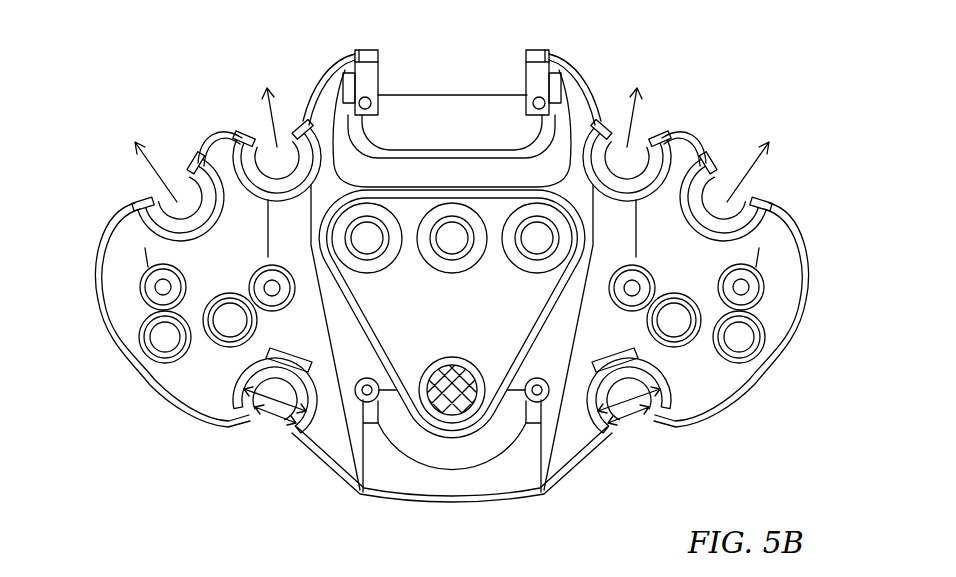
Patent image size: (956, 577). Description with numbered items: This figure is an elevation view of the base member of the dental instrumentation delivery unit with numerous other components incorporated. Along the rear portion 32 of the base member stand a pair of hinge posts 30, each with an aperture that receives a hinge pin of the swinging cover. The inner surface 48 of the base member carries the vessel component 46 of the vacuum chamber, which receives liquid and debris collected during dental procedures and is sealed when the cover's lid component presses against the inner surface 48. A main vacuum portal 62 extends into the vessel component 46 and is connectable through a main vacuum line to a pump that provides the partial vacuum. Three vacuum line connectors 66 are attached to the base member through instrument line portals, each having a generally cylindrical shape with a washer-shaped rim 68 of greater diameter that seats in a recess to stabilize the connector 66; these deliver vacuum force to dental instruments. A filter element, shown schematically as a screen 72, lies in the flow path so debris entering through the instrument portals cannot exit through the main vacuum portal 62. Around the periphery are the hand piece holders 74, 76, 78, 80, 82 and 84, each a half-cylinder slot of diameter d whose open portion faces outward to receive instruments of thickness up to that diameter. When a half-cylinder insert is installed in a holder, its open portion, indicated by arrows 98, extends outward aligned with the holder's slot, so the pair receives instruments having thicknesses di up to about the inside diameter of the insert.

The hinge post 30 is at (366, 80).
The rear portion 32 is at (450, 63).
The vessel component 46 is at (390, 362).
The inner surface 48 is at (353, 358).
The main vacuum portal 62 is at (452, 418).
The vacuum line connector 66 is at (368, 272).
The washer-shaped rim 68 is at (388, 262).
The screen 72 is at (467, 400).
The hand piece holder 74 is at (163, 200).
The hand piece holder 76 is at (263, 150).
The hand piece holder 78 is at (641, 150).
The hand piece holder 80 is at (741, 200).
The hand piece holder 82 is at (654, 427).
The hand piece holder 84 is at (250, 427).
The arrows 98 is at (145, 167).
The diameter d is at (193, 355).
The instrument thickness di is at (266, 425).